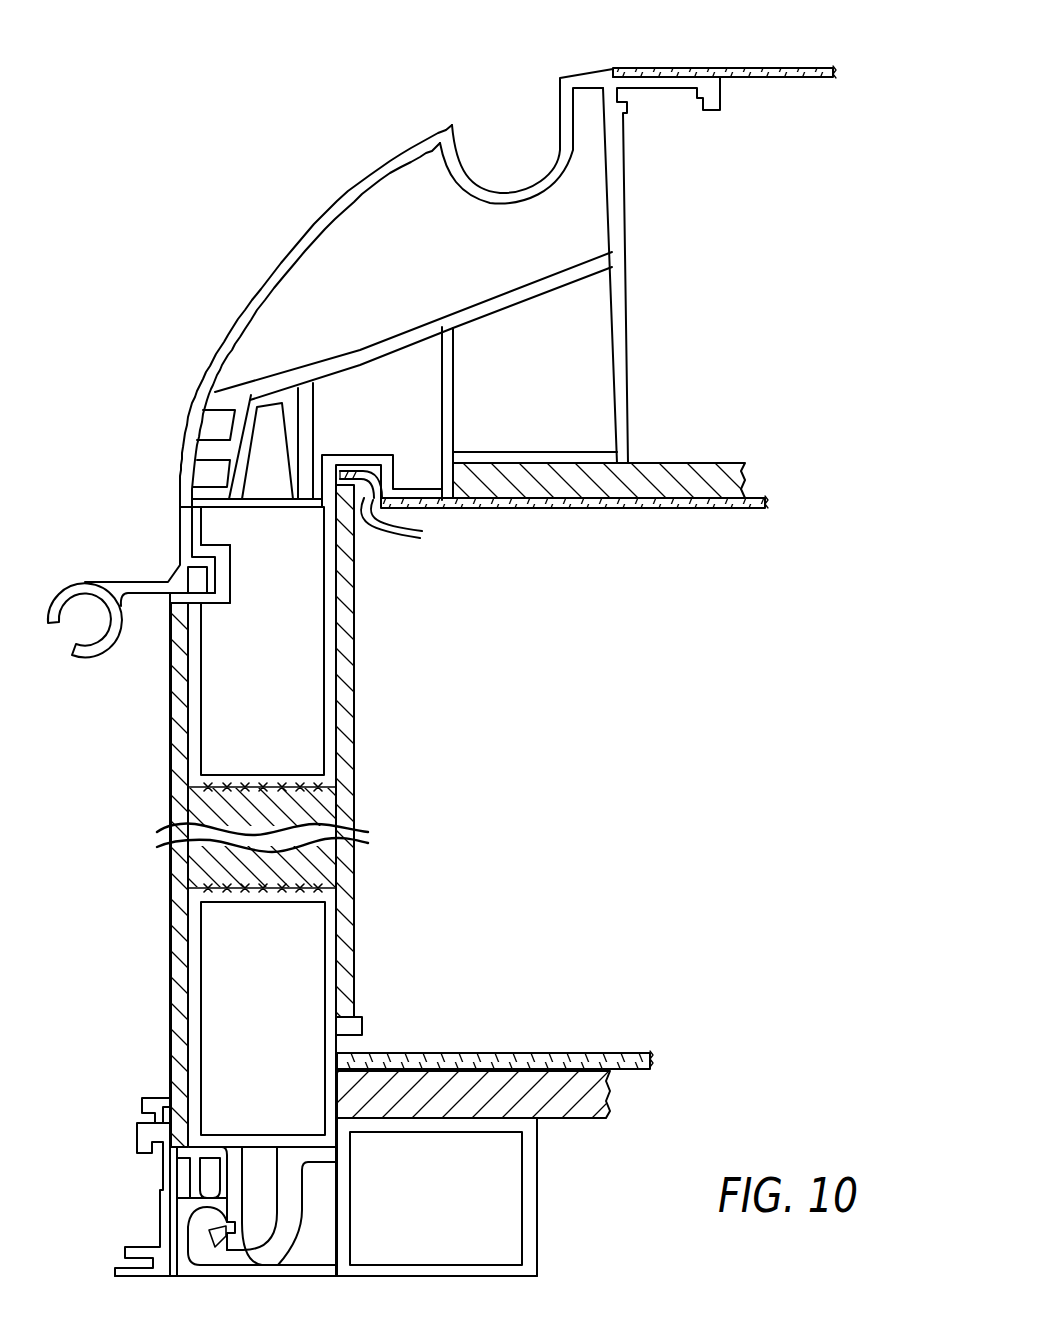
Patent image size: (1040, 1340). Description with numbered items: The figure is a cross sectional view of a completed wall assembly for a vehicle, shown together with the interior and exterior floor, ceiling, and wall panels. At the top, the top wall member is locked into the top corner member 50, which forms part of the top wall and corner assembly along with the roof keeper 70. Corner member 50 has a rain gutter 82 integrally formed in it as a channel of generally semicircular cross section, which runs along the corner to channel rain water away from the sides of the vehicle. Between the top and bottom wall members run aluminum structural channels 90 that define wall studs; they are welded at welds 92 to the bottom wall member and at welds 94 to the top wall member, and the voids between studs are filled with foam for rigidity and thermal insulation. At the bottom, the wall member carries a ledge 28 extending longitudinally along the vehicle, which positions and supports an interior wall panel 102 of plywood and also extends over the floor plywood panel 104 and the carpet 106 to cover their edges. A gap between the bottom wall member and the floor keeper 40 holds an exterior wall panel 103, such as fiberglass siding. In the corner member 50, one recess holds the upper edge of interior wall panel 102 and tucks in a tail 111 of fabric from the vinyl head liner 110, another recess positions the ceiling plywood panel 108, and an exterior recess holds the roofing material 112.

The ledge 28 is at (363, 1030).
The keeper 40 is at (160, 1224).
The top corner member 50 is at (629, 256).
The roof keeper 70 is at (179, 483).
The rain gutter 82 is at (458, 163).
The aluminum structural channels 90 is at (318, 806).
The welds 92 is at (322, 882).
The welds 94 is at (318, 789).
The interior wall panel 102 is at (355, 913).
The exterior wall panel 103 is at (170, 985).
The floor plywood panel 104 is at (612, 1095).
The carpet 106 is at (666, 1060).
The plywood panel 108 is at (684, 463).
The vinyl head liner 110 is at (703, 509).
The tail 111 is at (383, 524).
The roofing material 112 is at (734, 67).